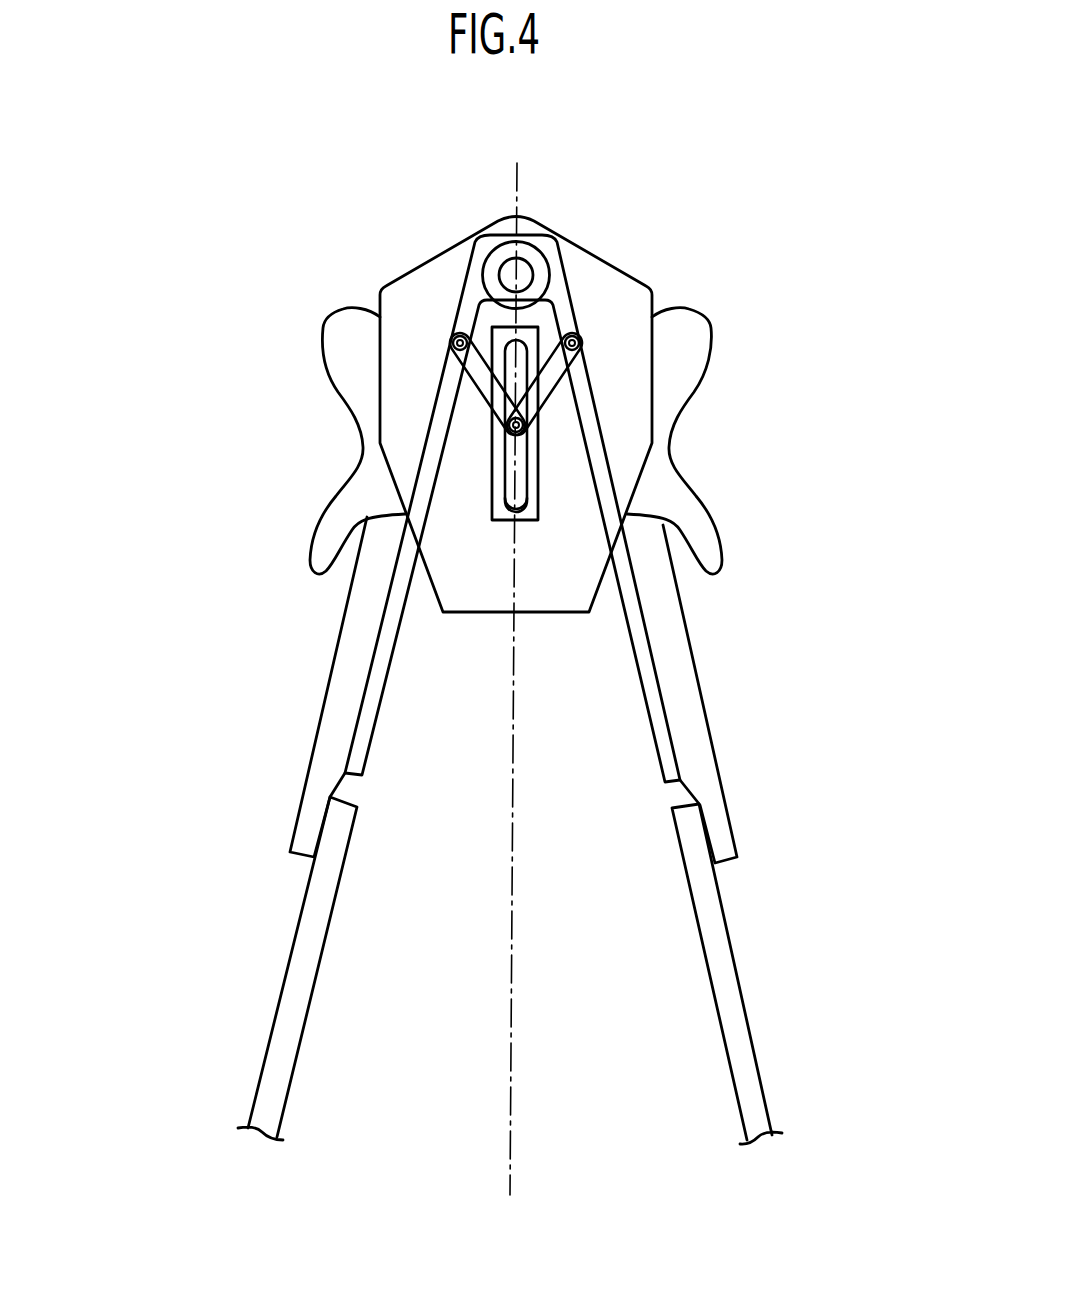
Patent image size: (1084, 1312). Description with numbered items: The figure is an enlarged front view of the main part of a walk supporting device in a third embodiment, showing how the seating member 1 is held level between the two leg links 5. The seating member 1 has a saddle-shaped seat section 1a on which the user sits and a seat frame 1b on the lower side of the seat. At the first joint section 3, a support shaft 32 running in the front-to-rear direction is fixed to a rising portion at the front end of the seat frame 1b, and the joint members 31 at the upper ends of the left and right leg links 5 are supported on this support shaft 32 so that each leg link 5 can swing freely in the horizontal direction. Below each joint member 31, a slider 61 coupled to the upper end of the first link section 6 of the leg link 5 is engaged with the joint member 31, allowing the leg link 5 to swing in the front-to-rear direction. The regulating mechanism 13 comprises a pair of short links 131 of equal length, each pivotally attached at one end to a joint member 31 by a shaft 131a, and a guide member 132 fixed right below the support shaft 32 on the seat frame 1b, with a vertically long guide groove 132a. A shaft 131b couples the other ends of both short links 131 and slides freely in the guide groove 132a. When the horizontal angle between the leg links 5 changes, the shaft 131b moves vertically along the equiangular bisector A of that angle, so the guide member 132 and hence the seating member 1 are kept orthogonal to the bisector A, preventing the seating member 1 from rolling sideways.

The seating member 1 is at (551, 398).
The seat section 1a is at (702, 499).
The seat frame 1b is at (655, 370).
The first joint section 3 is at (483, 213).
The support shaft 32 is at (487, 264).
The leg link 5 is at (511, 830).
The first link section 6 is at (270, 1041).
The regulating mechanism 13 is at (536, 490).
The joint member 31 is at (375, 683).
The slider 61 is at (296, 820).
The short link 131 is at (487, 385).
The shaft 131a is at (457, 343).
The shaft 131b is at (505, 428).
The guide member 132 is at (530, 522).
The guide groove 132a is at (520, 492).
The equiangular bisector A is at (510, 747).